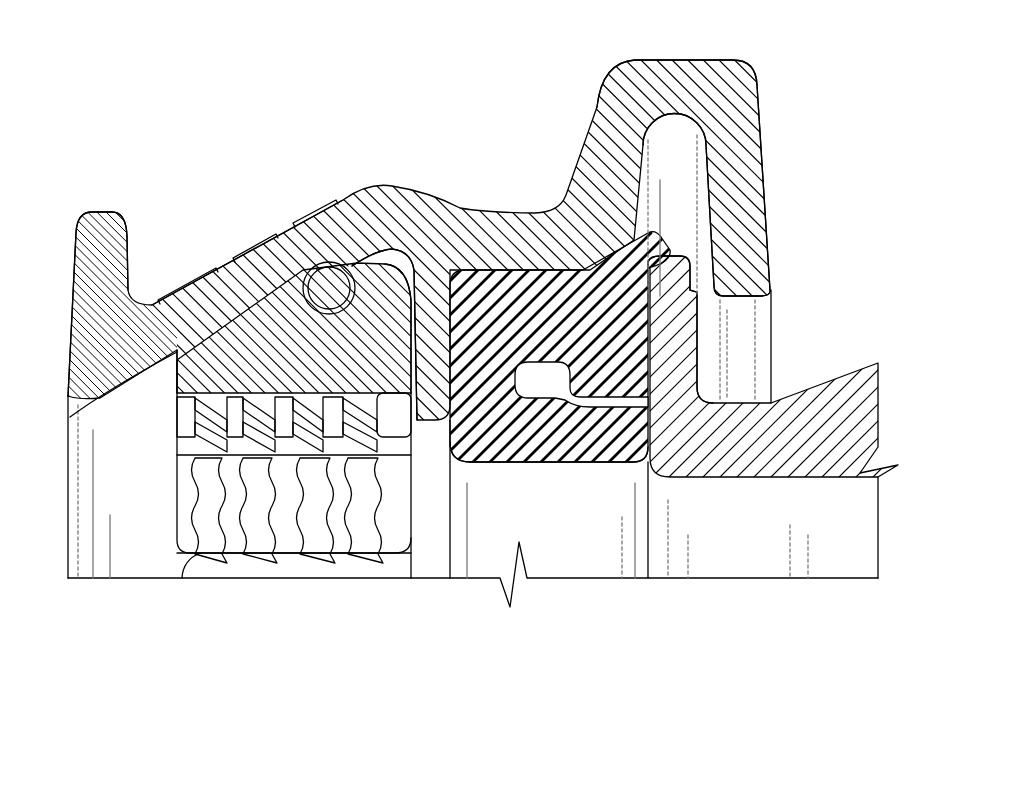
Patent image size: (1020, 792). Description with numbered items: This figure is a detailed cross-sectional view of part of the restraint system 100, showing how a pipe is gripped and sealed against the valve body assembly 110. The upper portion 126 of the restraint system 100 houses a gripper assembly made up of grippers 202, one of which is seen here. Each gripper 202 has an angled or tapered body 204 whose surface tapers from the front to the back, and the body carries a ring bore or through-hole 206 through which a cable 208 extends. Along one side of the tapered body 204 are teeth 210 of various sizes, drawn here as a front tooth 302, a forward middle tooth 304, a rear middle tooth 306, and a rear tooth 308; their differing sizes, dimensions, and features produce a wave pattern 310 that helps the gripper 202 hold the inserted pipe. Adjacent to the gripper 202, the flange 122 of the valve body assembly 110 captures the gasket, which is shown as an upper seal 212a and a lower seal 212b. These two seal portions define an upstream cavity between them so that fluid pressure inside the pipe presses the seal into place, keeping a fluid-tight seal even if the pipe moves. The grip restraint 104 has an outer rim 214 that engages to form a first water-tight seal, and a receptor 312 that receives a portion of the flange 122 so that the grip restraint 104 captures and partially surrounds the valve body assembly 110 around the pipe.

The restraint system 100 is at (72, 118).
The grip restraint 104 is at (597, 110).
The valve body assembly 110 is at (843, 395).
The flange 122 is at (690, 347).
The upper portion 126 is at (114, 222).
The gripper 202 is at (165, 362).
The tapered body 204 is at (248, 300).
The through-hole 206 is at (347, 268).
The cable 208 is at (322, 280).
The teeth 210 is at (242, 524).
The upper seal 212a is at (553, 381).
The lower seal 212b is at (587, 465).
The outer rim 214 is at (80, 522).
The front tooth 302 is at (215, 546).
The forward middle tooth 304 is at (263, 546).
The rear middle tooth 306 is at (320, 546).
The rear tooth 308 is at (368, 546).
The wave pattern 310 is at (290, 626).
The receptor 312 is at (693, 72).